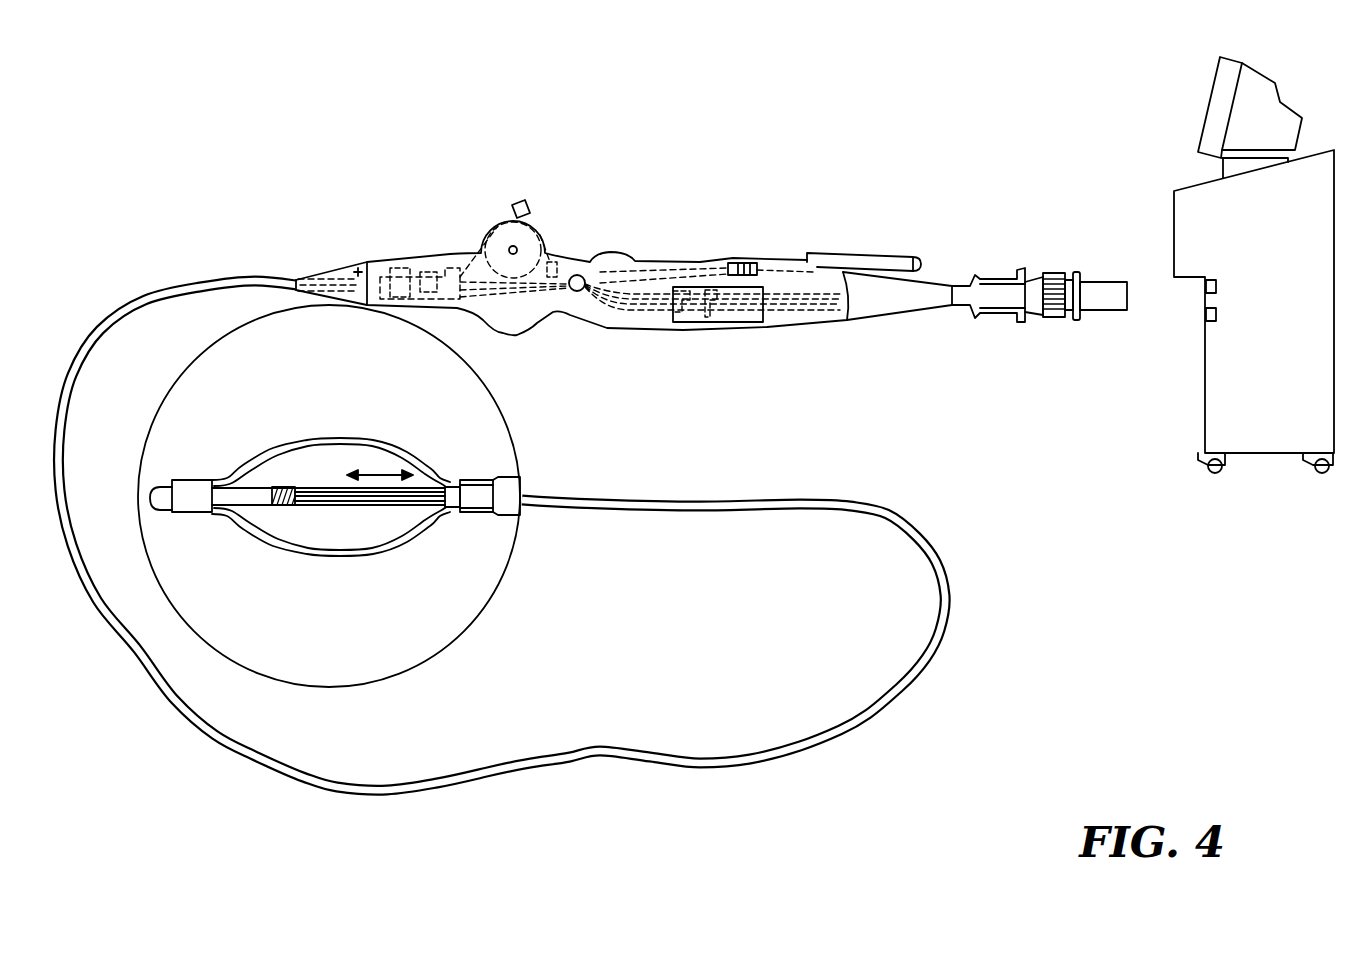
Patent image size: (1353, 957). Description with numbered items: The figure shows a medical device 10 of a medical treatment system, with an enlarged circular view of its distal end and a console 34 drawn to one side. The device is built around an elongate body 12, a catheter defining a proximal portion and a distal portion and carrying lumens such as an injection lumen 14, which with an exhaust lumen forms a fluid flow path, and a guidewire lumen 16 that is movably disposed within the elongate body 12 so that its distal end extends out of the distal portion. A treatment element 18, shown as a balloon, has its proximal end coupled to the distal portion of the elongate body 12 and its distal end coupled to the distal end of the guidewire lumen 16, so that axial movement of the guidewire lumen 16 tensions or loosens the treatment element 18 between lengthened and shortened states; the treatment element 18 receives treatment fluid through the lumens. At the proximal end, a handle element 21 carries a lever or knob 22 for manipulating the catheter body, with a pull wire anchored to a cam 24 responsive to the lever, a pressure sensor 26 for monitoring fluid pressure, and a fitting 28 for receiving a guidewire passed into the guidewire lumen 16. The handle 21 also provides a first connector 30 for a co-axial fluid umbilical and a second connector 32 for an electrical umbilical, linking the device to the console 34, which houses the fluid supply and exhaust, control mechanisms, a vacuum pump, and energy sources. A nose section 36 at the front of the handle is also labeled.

The medical device 10 is at (366, 120).
The elongate body 12 is at (164, 300).
The injection lumen 14 is at (398, 508).
The guidewire lumen 16 is at (273, 505).
The treatment element 18 is at (370, 438).
The handle element 21 is at (383, 262).
The lever or knob 22 is at (526, 199).
The cam 24 is at (487, 232).
The pressure sensor 26 is at (681, 296).
The fitting 28 is at (828, 256).
The first connector 30 is at (1023, 268).
The second connector 32 is at (1103, 292).
The console 34 is at (1283, 249).
The nose section 36 is at (362, 268).